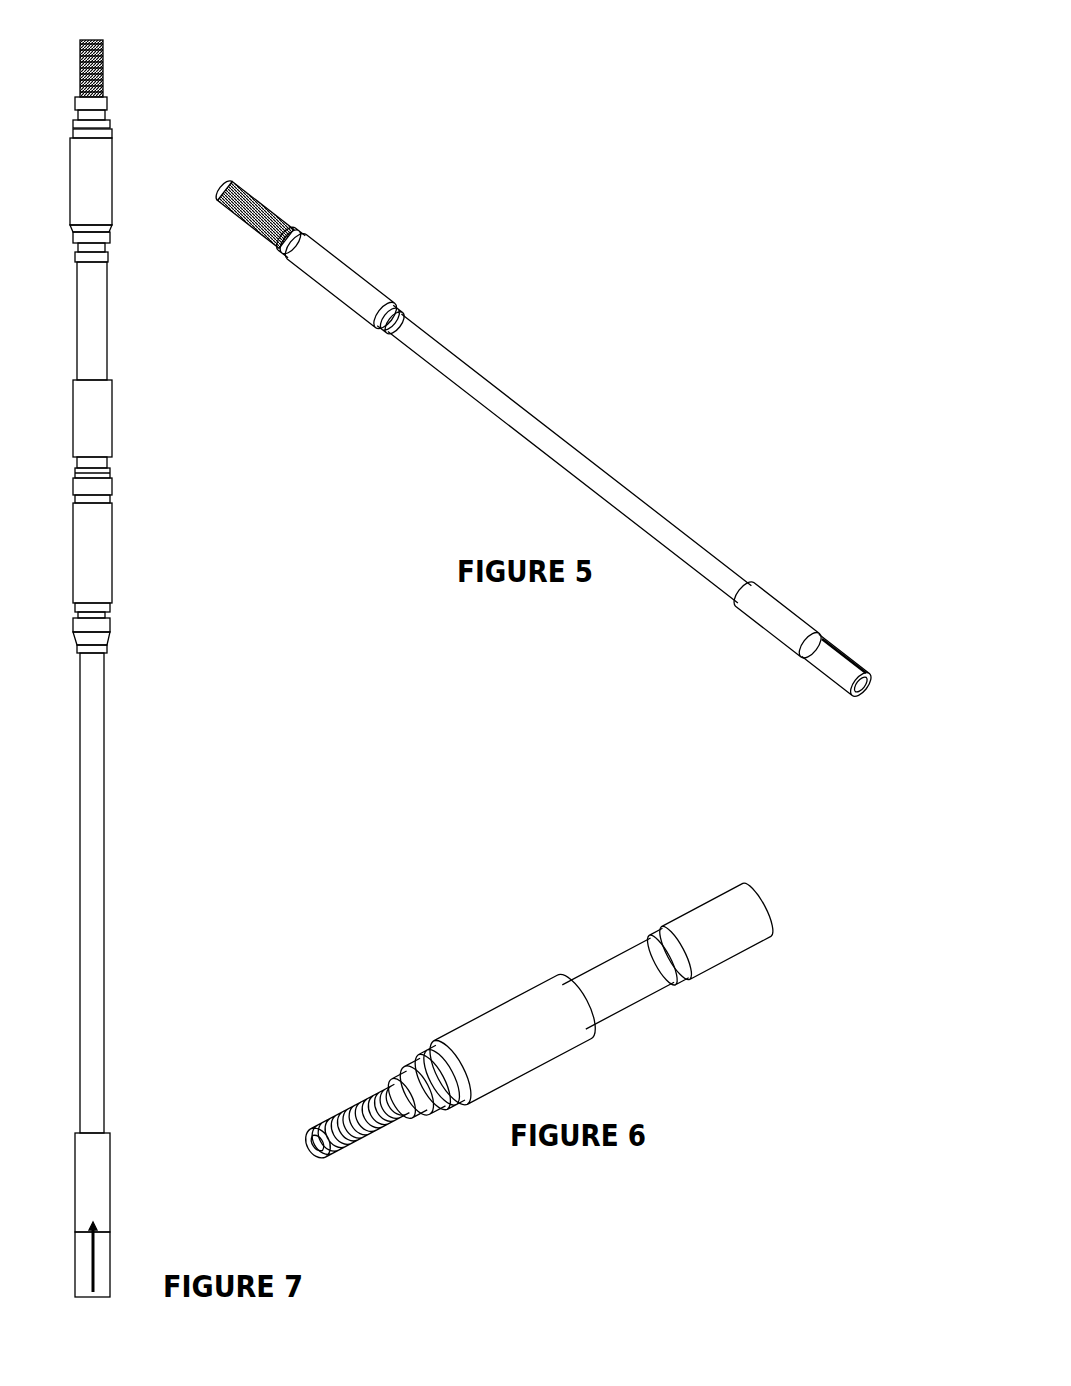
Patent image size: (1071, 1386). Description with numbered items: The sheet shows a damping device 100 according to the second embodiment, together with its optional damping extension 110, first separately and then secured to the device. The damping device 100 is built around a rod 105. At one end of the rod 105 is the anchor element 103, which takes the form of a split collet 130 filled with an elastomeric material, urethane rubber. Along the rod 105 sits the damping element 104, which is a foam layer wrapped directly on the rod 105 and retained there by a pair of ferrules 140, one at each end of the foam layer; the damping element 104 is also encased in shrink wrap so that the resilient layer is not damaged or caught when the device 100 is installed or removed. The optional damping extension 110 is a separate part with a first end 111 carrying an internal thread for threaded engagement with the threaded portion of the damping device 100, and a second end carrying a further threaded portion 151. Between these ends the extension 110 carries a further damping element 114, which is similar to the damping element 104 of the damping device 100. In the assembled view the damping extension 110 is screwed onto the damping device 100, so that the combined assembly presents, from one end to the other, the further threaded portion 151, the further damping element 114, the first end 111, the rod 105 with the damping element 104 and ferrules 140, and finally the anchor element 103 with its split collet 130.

In FIG. 7, the damping device 100 is at (176, 782).
In FIG. 5, the damping device 100 is at (593, 331).
In FIG. 7, the anchor element 103 is at (142, 1171).
In FIG. 5, the anchor element 103 is at (839, 594).
In FIG. 7, the damping element 104 is at (102, 570).
In FIG. 5, the damping element 104 is at (349, 270).
In FIG. 7, the rod 105 is at (100, 895).
In FIG. 5, the rod 105 is at (601, 479).
In FIG. 7, the damping extension 110 is at (128, 306).
In FIG. 6, the damping extension 110 is at (496, 877).
In FIG. 7, the first end 111 is at (102, 413).
In FIG. 6, the first end 111 is at (722, 907).
In FIG. 7, the further damping element 114 is at (100, 172).
In FIG. 6, the further damping element 114 is at (503, 1010).
In FIG. 7, the split collet 130 is at (104, 1261).
In FIG. 5, the split collet 130 is at (830, 665).
In FIG. 7, the ferrules 140 is at (100, 483).
In FIG. 5, the ferrules 140 is at (288, 253).
In FIG. 7, the further threaded portion 151 is at (102, 73).
In FIG. 5, the further threaded portion 151 is at (255, 214).
In FIG. 6, the further threaded portion 151 is at (332, 1117).